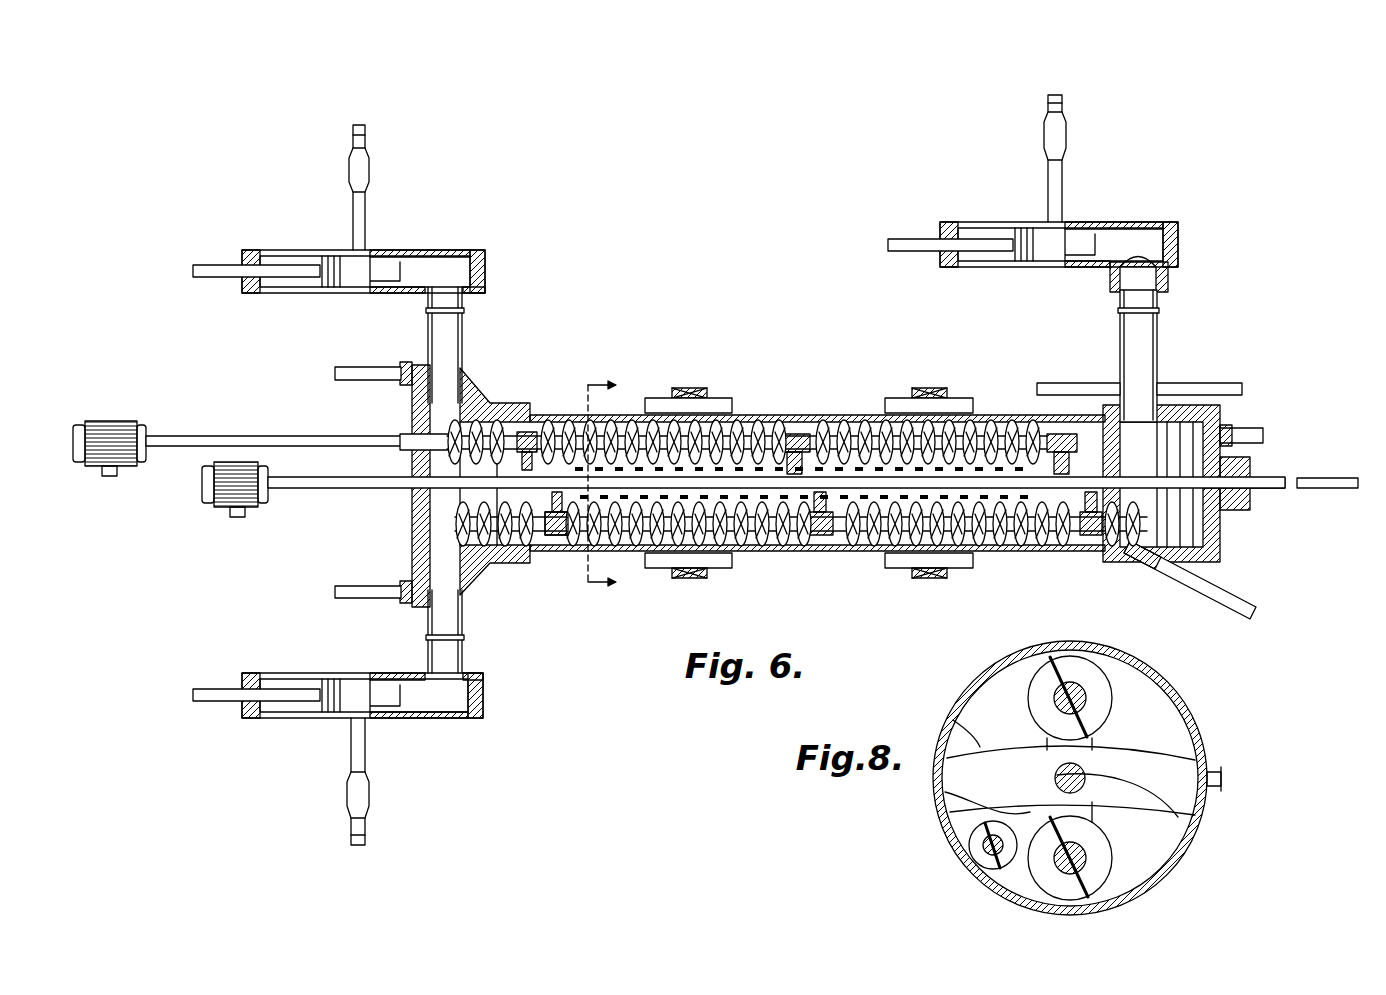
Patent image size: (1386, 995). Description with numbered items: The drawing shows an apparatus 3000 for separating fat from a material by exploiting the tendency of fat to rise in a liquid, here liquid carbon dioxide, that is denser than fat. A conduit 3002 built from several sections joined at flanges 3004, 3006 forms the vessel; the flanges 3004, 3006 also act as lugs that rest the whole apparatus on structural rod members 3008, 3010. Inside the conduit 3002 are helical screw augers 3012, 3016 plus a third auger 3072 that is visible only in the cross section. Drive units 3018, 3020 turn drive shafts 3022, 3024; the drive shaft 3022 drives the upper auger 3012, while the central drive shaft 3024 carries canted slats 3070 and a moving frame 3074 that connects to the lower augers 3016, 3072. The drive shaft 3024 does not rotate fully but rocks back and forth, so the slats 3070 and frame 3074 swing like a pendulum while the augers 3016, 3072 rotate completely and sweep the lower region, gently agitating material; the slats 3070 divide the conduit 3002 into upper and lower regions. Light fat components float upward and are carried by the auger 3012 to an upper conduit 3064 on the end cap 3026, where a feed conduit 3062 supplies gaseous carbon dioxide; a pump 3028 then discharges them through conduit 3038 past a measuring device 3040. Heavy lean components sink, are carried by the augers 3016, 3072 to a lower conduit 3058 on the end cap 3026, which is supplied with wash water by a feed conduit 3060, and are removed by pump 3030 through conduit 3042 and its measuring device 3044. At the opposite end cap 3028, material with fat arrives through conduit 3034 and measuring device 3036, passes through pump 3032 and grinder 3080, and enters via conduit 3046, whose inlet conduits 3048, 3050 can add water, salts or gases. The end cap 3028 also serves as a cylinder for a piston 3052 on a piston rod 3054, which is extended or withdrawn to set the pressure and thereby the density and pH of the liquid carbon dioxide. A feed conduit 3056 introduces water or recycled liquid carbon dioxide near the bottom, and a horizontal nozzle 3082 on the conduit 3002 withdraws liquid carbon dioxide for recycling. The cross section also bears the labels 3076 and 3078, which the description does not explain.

In FIG. 6, the apparatus 3000 is at (764, 278).
In FIG. 6, the conduit 3002 is at (805, 413).
In FIG. 8, the conduit 3002 is at (1196, 718).
In FIG. 6, the flange 3004 is at (688, 387).
In FIG. 6, the flange 3006 is at (958, 398).
In FIG. 6, the structural rod member 3008 is at (728, 402).
In FIG. 6, the structural rod member 3010 is at (718, 569).
In FIG. 6, the auger 3012 is at (920, 388).
In FIG. 8, the auger 3012 is at (1116, 665).
In FIG. 6, the auger 3016 is at (1020, 546).
In FIG. 8, the auger 3016 is at (1139, 872).
In FIG. 6, the drive unit 3018 is at (120, 420).
In FIG. 6, the drive unit 3020 is at (198, 507).
In FIG. 6, the drive shaft 3022 is at (236, 436).
In FIG. 8, the drive shaft 3022 is at (1060, 659).
In FIG. 6, the drive shaft 3024 is at (312, 490).
In FIG. 8, the drive shaft 3024 is at (1176, 820).
In FIG. 6, the end cap 3026 is at (478, 384).
In FIG. 6, the pump / end cap 3028 is at (348, 297).
In FIG. 6, the pump 3030 is at (330, 665).
In FIG. 6, the pump 3032 is at (1074, 216).
In FIG. 6, the conduit 3034 is at (1046, 198).
In FIG. 6, the measuring device 3036 is at (1046, 122).
In FIG. 6, the conduit 3038 is at (352, 218).
In FIG. 6, the measuring device 3040 is at (352, 153).
In FIG. 6, the conduit 3042 is at (350, 756).
In FIG. 6, the measuring device 3044 is at (350, 800).
In FIG. 6, the conduit 3046 is at (1160, 332).
In FIG. 6, the inlet conduit 3048 is at (1080, 382).
In FIG. 6, the inlet conduit 3050 is at (1225, 384).
In FIG. 6, the piston 3052 is at (1182, 433).
In FIG. 6, the piston rod 3054 is at (1332, 480).
In FIG. 6, the feed conduit 3056 is at (1256, 601).
In FIG. 6, the conduit 3058 is at (463, 612).
In FIG. 6, the feed conduit 3060 is at (382, 585).
In FIG. 6, the feed conduit 3062 is at (380, 382).
In FIG. 6, the conduit 3064 is at (465, 325).
In FIG. 6, the slat 3070 is at (797, 520).
In FIG. 8, the slat 3070 is at (953, 720).
In FIG. 8, the auger 3072 is at (937, 867).
In FIG. 8, the moving frame 3074 is at (944, 792).
In FIG. 6, the coupling 3076 is at (558, 524).
In FIG. 8, the coupling 3076 is at (1106, 887).
In FIG. 8, the bearing 3078 is at (988, 856).
In FIG. 6, the grinder 3080 is at (1150, 258).
In FIG. 8, the horizontal nozzle 3082 is at (1223, 780).